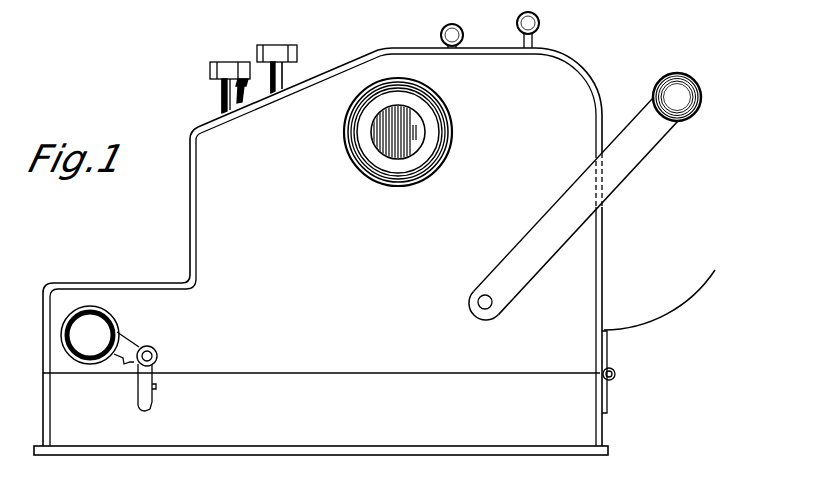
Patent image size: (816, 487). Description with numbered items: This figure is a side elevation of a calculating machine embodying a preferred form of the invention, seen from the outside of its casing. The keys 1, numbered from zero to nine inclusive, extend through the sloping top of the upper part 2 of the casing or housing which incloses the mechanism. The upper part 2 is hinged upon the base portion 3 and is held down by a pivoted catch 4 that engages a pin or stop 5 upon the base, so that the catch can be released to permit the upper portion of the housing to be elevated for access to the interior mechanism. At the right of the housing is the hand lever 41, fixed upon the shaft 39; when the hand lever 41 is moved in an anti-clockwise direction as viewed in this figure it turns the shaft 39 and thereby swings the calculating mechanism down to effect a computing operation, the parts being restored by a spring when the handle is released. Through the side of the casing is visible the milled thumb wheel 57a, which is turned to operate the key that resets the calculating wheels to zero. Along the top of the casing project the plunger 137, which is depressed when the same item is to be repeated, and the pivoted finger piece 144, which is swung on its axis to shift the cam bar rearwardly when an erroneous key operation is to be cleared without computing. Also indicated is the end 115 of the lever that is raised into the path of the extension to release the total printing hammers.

The keys 1 is at (278, 55).
The upper part of the casing or housing 2 is at (342, 70).
The base portion 3 is at (321, 431).
The pivoted catch 4 is at (128, 348).
The pin or stop 5 is at (153, 389).
The shaft 39 is at (492, 301).
The hand lever 41 is at (635, 151).
The milled thumb wheel 57a is at (402, 128).
The opposite end of lever 115 is at (240, 98).
The plunger 137 is at (520, 26).
The pivoted finger piece 144 is at (441, 33).